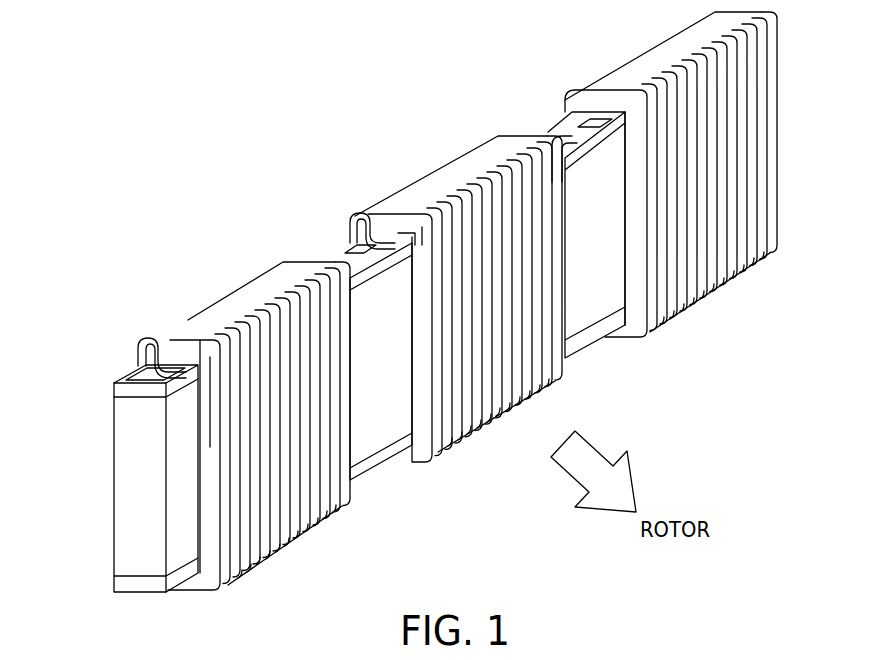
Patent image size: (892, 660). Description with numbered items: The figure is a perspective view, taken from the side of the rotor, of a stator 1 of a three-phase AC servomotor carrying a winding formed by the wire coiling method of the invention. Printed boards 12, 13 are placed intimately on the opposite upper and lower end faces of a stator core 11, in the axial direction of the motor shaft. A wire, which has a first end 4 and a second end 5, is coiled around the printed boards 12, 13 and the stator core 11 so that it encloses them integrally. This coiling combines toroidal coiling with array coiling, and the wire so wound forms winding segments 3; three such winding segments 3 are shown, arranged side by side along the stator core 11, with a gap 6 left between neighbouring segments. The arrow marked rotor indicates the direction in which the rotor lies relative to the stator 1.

The stator 1 is at (268, 152).
The winding segments 3 is at (406, 143).
The first end 4 is at (197, 342).
The second end 5 is at (142, 345).
The gap 6 is at (350, 242).
The stator core 11 is at (140, 515).
The printed board 12 is at (112, 388).
The printed board 13 is at (112, 585).